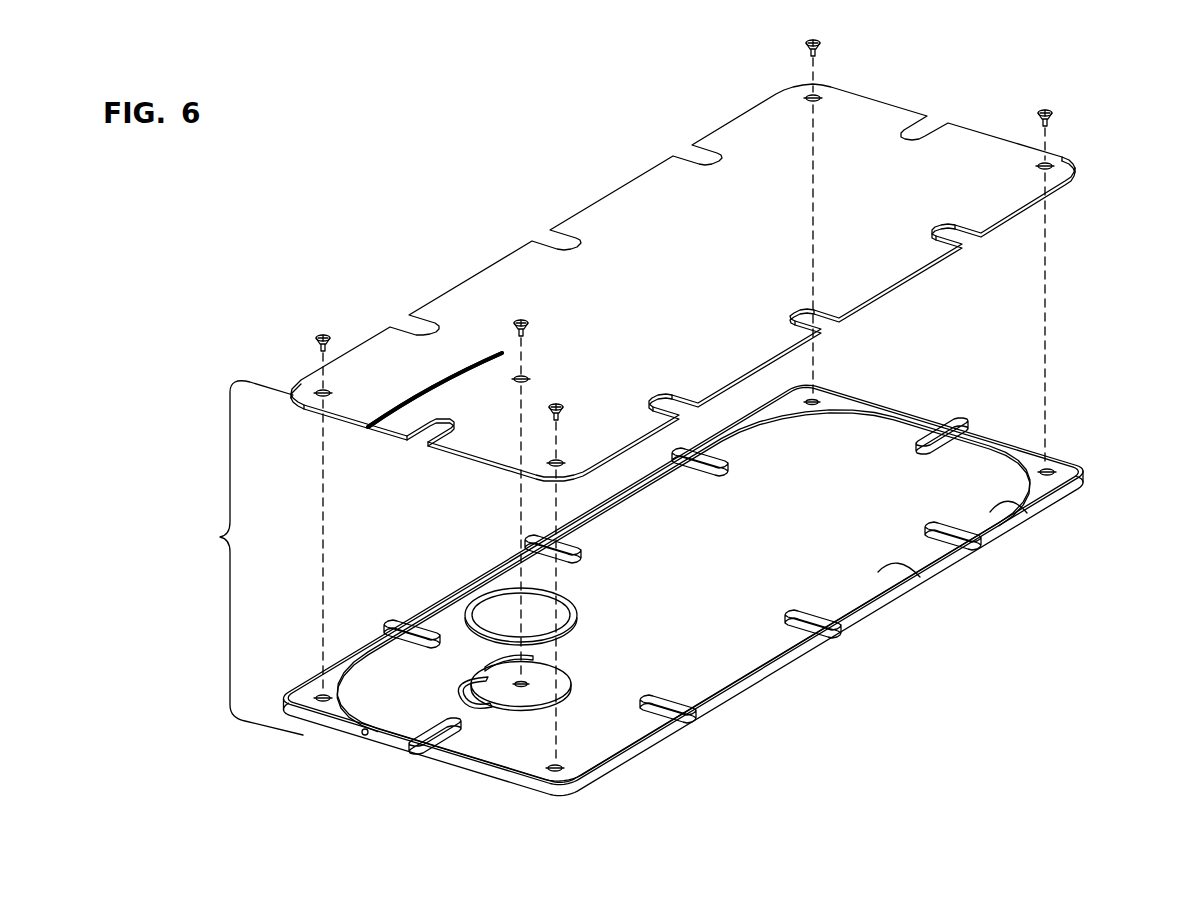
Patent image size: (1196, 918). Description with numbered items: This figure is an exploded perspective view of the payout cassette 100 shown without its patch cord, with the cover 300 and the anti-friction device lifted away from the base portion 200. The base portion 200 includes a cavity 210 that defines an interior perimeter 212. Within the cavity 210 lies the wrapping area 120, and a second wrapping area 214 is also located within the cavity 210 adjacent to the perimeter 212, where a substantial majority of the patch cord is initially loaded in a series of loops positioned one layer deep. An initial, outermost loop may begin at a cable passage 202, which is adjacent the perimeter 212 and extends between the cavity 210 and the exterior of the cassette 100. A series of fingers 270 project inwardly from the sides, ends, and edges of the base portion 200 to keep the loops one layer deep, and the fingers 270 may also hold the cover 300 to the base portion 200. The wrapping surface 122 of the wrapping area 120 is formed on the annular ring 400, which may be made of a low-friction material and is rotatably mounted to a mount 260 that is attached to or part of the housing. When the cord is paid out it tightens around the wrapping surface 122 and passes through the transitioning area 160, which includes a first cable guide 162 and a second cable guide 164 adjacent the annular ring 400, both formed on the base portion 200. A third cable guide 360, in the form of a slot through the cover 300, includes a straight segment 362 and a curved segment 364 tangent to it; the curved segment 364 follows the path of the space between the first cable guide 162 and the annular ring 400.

The cassette 100 is at (220, 537).
The wrapping area 120 is at (572, 700).
The wrapping surface 122 is at (576, 622).
The transitioning area 160 is at (441, 689).
The first cable guide 162 is at (487, 664).
The second cable guide 164 is at (455, 666).
The base portion 200 is at (736, 590).
The cable passage 202 is at (817, 403).
The cavity 210 is at (922, 577).
The interior perimeter 212 is at (790, 419).
The second wrapping area 214 is at (1025, 500).
The mount 260 is at (519, 707).
The fingers 270 is at (721, 470).
The cover 300 is at (1082, 161).
The third cable guide 360 is at (417, 396).
The straight segment 362 is at (417, 397).
The curved segment 364 is at (483, 356).
The annular ring 400 is at (552, 603).